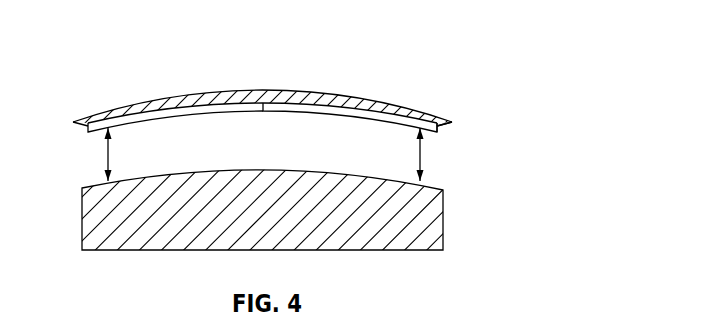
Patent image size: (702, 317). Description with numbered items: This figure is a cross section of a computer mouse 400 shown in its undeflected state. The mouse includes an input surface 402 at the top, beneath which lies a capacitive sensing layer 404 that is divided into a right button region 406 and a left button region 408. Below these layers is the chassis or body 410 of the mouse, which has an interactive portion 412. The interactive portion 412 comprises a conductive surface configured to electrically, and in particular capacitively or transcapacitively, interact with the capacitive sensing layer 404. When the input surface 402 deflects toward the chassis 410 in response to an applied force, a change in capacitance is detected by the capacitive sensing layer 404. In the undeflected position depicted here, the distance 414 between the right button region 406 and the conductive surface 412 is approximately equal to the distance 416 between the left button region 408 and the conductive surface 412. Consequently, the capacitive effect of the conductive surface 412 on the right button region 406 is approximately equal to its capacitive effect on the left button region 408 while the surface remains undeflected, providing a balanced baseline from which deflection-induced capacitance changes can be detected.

The computer mouse 400 is at (499, 32).
The input surface 402 is at (393, 104).
The capacitive sensing layer 404 is at (445, 127).
The right button region 406 is at (233, 113).
The left button region 408 is at (292, 113).
The chassis or body 410 is at (443, 213).
The interactive portion 412 is at (283, 171).
The distance 414 is at (104, 152).
The distance 416 is at (423, 153).